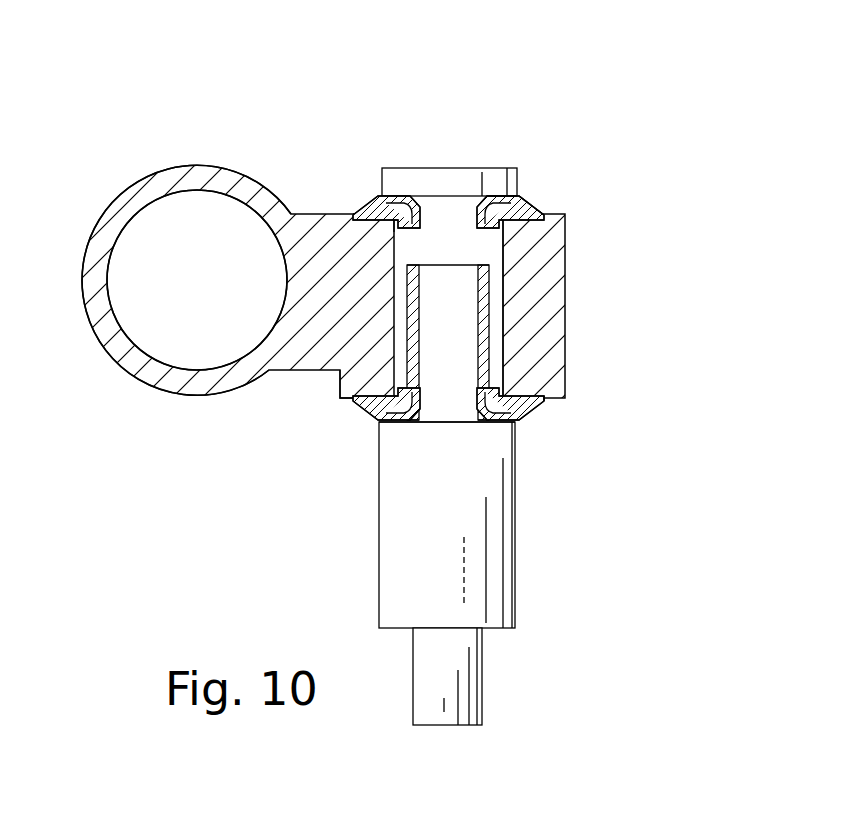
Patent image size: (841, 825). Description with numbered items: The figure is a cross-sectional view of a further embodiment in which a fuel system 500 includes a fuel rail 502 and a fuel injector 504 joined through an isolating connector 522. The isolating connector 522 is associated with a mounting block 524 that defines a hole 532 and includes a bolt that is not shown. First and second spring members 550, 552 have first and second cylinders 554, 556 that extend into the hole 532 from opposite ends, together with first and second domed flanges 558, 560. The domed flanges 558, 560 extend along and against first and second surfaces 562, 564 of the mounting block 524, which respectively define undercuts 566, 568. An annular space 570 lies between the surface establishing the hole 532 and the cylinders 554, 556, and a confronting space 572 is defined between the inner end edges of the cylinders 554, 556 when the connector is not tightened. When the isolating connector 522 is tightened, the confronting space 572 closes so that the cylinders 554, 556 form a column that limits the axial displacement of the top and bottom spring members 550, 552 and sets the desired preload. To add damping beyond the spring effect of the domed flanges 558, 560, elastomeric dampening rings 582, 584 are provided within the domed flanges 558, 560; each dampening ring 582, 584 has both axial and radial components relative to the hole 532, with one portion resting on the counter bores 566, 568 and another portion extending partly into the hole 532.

The fuel system 500 is at (300, 136).
The fuel rail 502 is at (170, 173).
The fuel injector 504 is at (395, 572).
The isolating connector 522 is at (549, 149).
The mounting block 524 is at (555, 340).
The hole 532 is at (510, 238).
The first spring member 550 is at (538, 193).
The second spring member 552 is at (523, 431).
The first cylinder 554 is at (420, 212).
The second cylinder 556 is at (487, 313).
The first domed flange 558 is at (367, 207).
The second domed flange 560 is at (527, 413).
The first surface 562 is at (305, 213).
The second surface 564 is at (557, 403).
The undercut 566 is at (392, 229).
The undercut 568 is at (385, 392).
The annular space 570 is at (495, 363).
The confronting space 572 is at (478, 252).
The elastomeric dampening ring 582 is at (493, 210).
The elastomeric dampening ring 584 is at (370, 413).